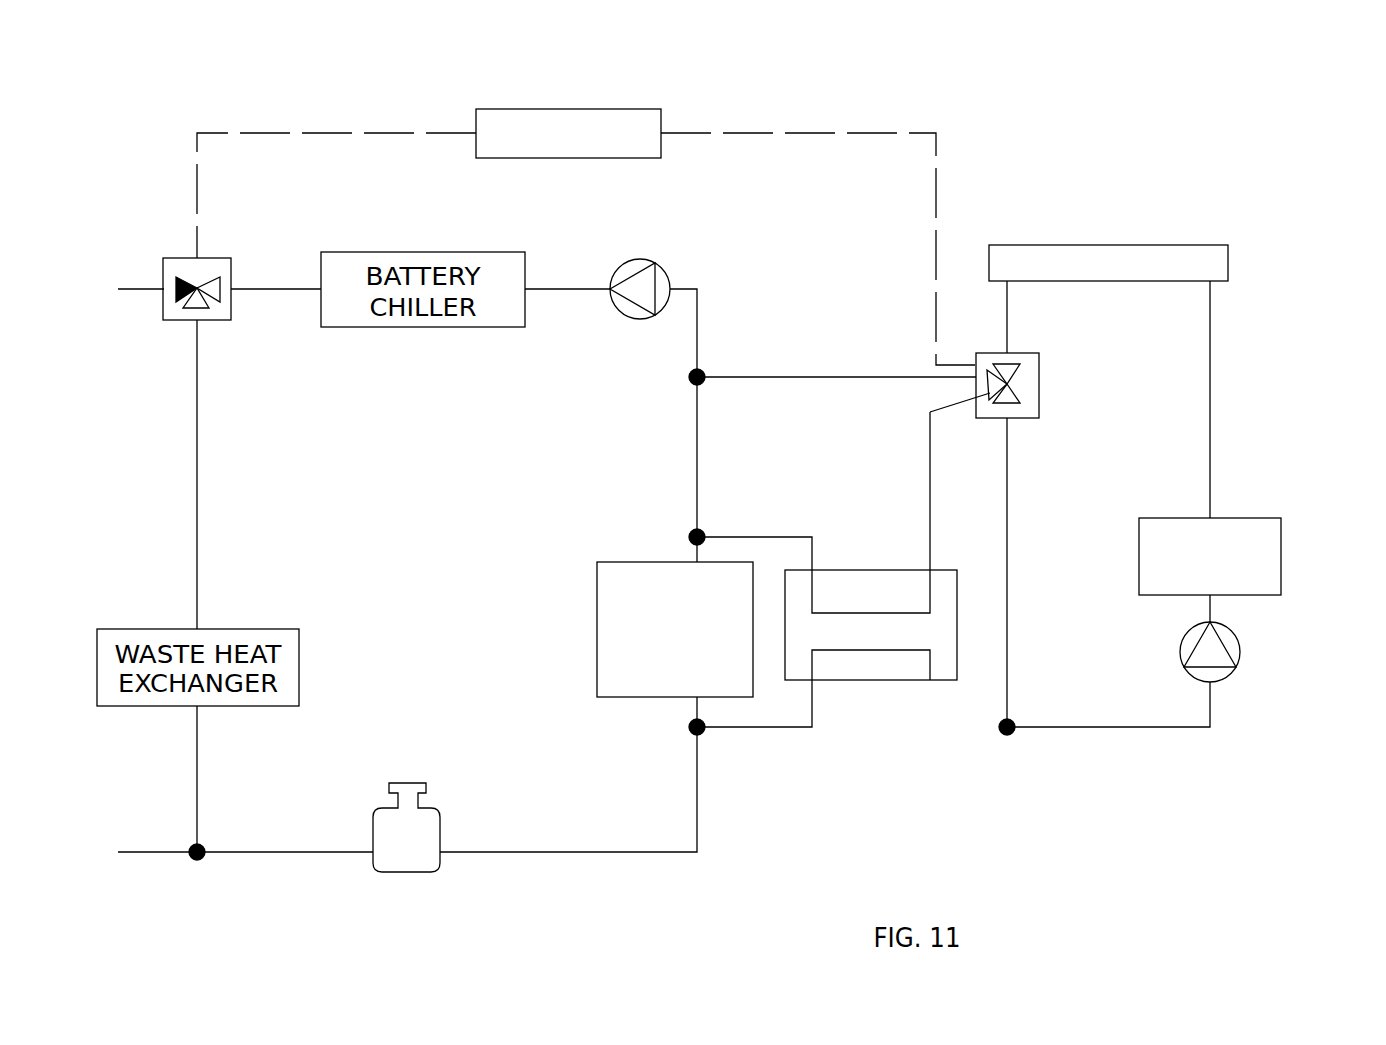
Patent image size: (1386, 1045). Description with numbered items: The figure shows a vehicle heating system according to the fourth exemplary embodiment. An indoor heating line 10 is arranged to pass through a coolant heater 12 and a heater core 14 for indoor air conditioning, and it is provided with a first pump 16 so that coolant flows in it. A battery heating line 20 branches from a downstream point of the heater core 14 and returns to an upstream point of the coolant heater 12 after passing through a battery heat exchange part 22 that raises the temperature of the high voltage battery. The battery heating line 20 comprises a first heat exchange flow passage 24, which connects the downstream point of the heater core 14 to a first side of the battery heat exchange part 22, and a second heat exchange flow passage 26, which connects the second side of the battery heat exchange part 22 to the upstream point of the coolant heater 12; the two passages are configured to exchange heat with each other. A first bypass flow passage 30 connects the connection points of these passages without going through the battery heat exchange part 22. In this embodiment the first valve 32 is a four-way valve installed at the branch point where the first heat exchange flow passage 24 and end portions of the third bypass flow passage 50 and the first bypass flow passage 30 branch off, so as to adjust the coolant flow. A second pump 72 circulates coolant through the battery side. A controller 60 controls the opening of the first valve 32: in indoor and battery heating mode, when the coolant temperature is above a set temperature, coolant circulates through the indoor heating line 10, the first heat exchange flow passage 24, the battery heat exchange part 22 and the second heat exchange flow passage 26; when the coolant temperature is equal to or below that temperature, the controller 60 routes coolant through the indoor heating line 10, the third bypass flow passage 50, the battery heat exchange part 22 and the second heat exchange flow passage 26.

The indoor heating line 10 is at (1212, 465).
The coolant heater 12 is at (1283, 556).
The heater core 14 is at (1110, 245).
The first pump 16 is at (1242, 650).
The battery heating line 20 is at (870, 546).
The battery heat exchange part 22 is at (597, 633).
The first heat exchange flow passage 24 is at (760, 537).
The second heat exchange flow passage 26 is at (755, 727).
The first bypass flow passage 30 is at (1009, 613).
The first valve 32 is at (1040, 393).
The third bypass flow passage 50 is at (805, 377).
The controller 60 is at (568, 109).
The second pump 72 is at (640, 258).